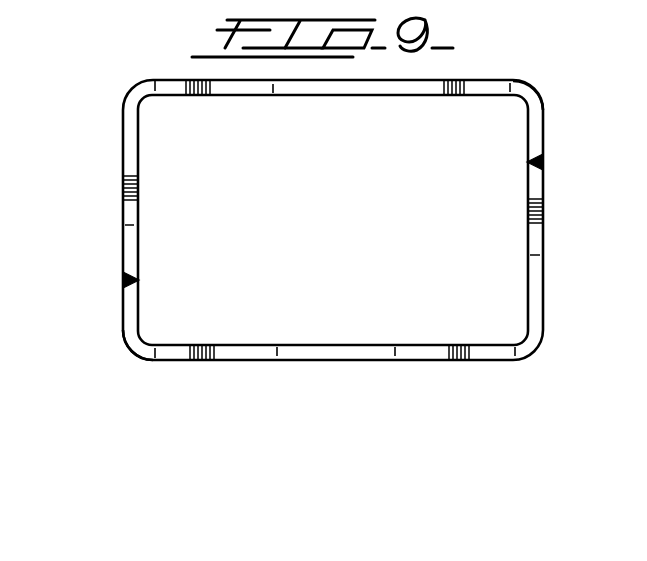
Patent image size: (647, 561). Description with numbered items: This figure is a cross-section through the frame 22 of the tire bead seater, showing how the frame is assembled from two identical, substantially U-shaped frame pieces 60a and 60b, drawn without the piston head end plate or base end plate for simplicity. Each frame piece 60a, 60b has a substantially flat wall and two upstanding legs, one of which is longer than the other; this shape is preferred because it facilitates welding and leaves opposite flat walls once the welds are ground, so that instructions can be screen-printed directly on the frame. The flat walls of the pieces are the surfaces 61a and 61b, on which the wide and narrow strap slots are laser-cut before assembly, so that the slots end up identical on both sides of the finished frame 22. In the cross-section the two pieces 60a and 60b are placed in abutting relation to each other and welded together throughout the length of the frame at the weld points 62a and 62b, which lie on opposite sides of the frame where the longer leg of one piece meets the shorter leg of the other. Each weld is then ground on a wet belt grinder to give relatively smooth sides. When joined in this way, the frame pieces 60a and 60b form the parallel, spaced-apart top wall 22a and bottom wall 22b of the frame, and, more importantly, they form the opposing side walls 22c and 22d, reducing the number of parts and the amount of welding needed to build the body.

The frame 22 is at (563, 138).
The top wall 22a is at (492, 86).
The bottom wall 22b is at (355, 352).
The side wall 22c is at (533, 255).
The side wall 22d is at (128, 226).
The frame piece 60a is at (529, 90).
The frame piece 60b is at (140, 356).
The surface 61a is at (157, 85).
The surface 61b is at (250, 352).
The weld point 62a is at (543, 162).
The weld point 62b is at (124, 280).